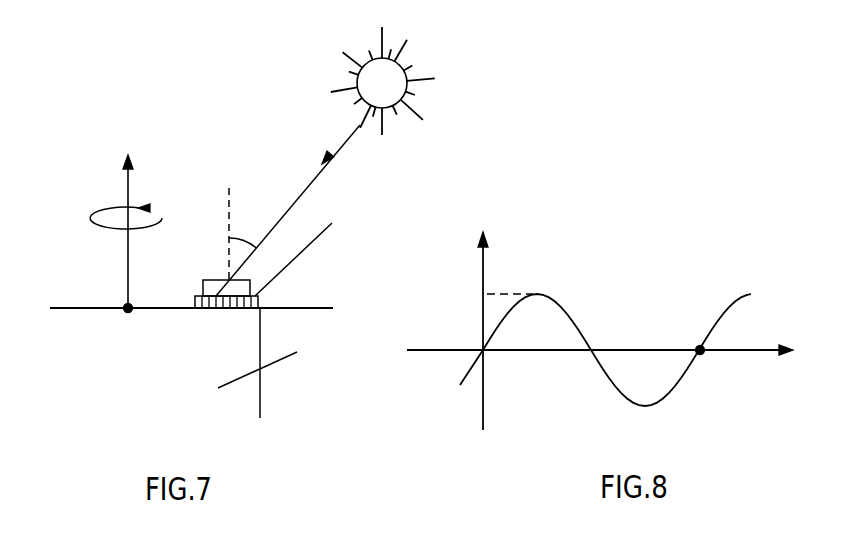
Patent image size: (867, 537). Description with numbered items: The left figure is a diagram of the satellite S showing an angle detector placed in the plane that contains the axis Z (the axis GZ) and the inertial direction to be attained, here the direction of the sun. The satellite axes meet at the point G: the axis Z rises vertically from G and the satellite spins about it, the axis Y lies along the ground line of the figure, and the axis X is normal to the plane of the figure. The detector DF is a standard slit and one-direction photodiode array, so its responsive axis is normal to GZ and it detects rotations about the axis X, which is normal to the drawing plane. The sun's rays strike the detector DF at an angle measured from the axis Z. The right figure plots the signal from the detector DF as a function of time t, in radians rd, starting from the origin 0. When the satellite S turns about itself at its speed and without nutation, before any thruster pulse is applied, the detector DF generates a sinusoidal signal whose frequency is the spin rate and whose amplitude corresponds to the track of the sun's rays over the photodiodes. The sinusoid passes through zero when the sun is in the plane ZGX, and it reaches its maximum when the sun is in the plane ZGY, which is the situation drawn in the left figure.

In FIG. 7, the axis GZ Z is at (130, 218).
In FIG. 7, the axis GX X is at (89, 295).
In FIG. 7, the axis GY Y is at (238, 310).
In FIG. 7, the satellite center G is at (121, 315).
In FIG. 7, the photodiode array detector DF is at (311, 253).
In FIG. 7, the satellite S is at (265, 363).
In FIG. 8, the radians axis rd is at (487, 315).
In FIG. 8, the time axis t is at (600, 339).
In FIG. 8, the origin of graph 0 is at (486, 355).